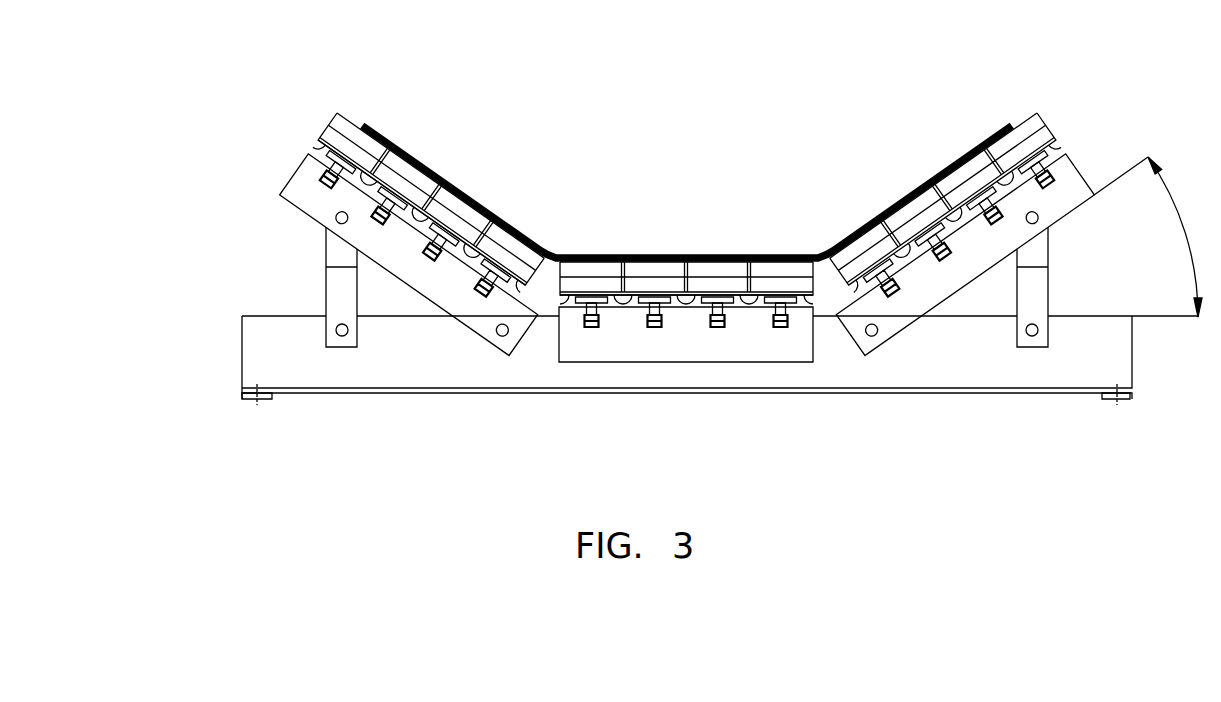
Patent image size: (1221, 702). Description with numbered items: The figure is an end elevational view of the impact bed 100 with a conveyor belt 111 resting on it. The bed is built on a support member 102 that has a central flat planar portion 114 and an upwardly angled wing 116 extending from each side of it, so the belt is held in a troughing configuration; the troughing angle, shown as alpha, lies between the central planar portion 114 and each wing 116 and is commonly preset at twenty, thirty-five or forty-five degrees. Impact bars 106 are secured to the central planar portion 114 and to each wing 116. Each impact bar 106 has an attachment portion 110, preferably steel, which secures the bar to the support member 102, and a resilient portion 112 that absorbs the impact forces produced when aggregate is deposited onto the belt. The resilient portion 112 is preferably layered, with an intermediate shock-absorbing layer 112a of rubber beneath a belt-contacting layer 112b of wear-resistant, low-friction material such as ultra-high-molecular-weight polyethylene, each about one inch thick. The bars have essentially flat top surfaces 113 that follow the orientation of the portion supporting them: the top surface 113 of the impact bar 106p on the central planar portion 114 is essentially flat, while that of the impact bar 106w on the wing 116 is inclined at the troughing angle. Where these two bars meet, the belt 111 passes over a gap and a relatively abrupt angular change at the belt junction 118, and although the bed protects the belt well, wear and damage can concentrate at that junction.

The impact bed 100 is at (826, 85).
The support member 102 is at (258, 331).
The impact bar 106 is at (343, 124).
The impact bar supported by the central planar portion 106p is at (815, 306).
The impact bar supported by the wing 106w is at (910, 287).
The attachment portion 110 is at (313, 150).
The conveyor belt 111 is at (483, 223).
The resilient portion 112 is at (385, 180).
The intermediate shock-absorbing layer 112a is at (357, 157).
The belt-contacting layer 112b is at (382, 131).
The top surface 113 is at (750, 270).
The central planar portion 114 is at (732, 348).
The wing 116 is at (302, 190).
The belt junction 118 is at (826, 248).